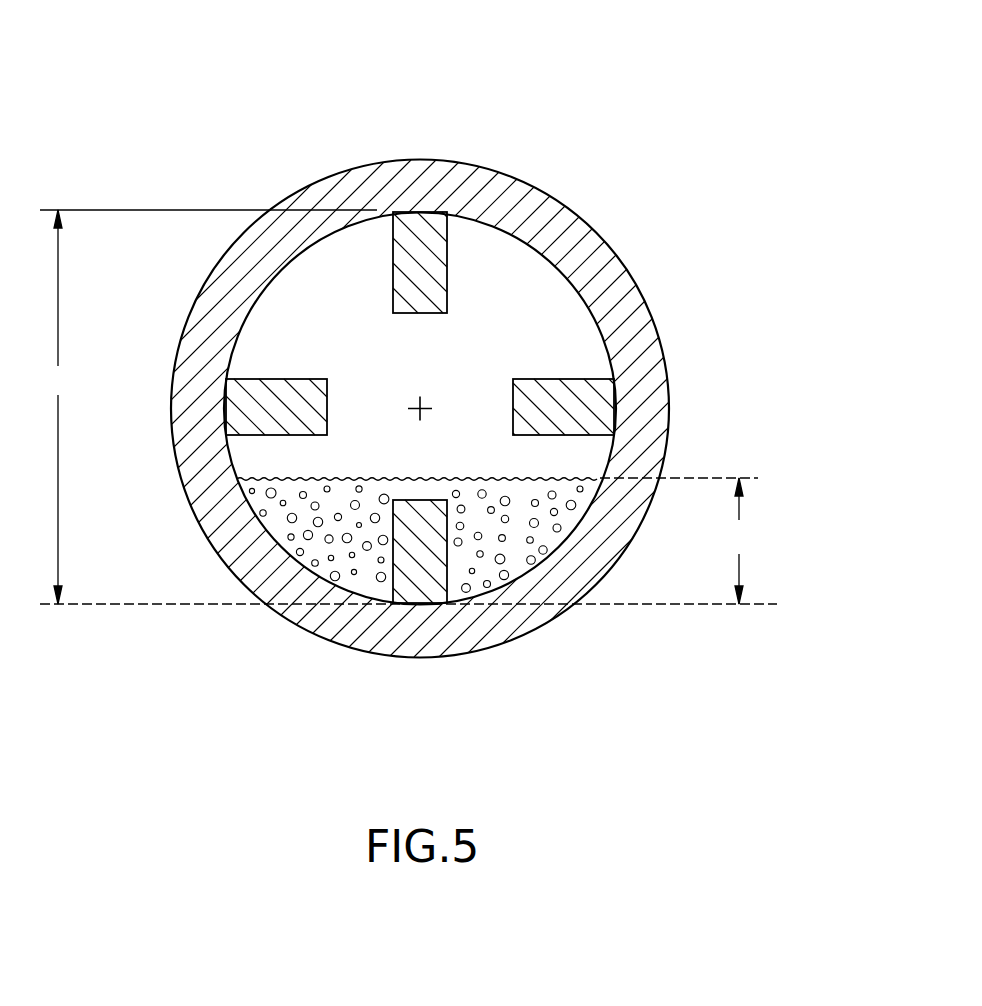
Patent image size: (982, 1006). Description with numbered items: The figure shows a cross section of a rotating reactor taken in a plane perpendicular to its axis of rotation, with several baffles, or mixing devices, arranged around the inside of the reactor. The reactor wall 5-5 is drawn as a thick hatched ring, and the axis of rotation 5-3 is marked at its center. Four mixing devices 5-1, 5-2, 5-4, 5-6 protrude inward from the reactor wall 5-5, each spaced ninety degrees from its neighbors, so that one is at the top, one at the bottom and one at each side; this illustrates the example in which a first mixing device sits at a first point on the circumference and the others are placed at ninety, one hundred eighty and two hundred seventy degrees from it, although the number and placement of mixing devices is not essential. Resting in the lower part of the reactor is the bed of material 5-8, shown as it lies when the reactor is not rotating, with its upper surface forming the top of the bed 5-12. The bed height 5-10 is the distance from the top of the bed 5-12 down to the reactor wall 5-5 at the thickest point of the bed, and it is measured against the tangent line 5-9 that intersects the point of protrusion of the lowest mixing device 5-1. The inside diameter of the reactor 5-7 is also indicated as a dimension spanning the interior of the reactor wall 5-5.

The mixing device 5-1 is at (453, 557).
The mixing device 5-2 is at (272, 437).
The axis of rotation 5-3 is at (423, 403).
The mixing device 5-4 is at (390, 256).
The reactor wall 5-5 is at (633, 280).
The mixing device 5-6 is at (572, 378).
The inside diameter of the reactor 5-7 is at (203, 407).
The bed of material 5-8 is at (305, 505).
The tangent line 5-9 is at (438, 608).
The bed height 5-10 is at (686, 541).
The top of the bed 5-12 is at (570, 474).